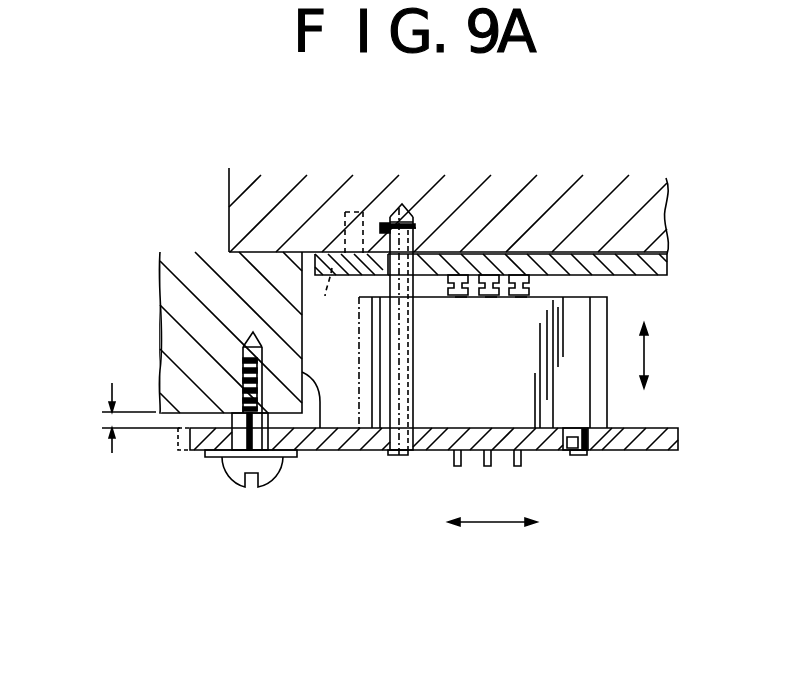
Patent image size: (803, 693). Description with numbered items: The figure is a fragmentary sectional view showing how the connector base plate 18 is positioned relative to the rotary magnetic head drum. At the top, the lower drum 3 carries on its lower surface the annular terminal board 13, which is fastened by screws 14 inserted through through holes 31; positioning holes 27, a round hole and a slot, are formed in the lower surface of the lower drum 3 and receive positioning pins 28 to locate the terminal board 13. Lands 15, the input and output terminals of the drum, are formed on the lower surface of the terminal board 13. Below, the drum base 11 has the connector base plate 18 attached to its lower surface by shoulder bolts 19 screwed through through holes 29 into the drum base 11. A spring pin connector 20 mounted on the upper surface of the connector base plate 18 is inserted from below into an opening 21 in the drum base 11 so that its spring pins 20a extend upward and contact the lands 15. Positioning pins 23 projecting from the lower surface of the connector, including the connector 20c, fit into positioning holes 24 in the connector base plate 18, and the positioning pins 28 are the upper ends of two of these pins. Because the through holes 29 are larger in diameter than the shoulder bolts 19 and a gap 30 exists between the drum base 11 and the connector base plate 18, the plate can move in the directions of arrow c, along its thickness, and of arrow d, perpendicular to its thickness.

The lower drum 3 is at (268, 205).
The drum base 11 is at (162, 270).
The terminal board 13 is at (634, 253).
The screws 14 is at (342, 227).
The lands 15 is at (519, 274).
The connector base plate 18 is at (297, 448).
The shoulder bolts 19 is at (245, 470).
The spring pin connector 20 is at (608, 400).
The spring pins 20a is at (520, 298).
The spring pin connector 20c is at (457, 468).
The openings 21 is at (309, 432).
The positioning pins 23 is at (405, 456).
The positioning holes 24 is at (390, 454).
The positioning holes 27 is at (400, 204).
The positioning pins 28 is at (415, 226).
The through holes 29 is at (226, 462).
The gap 30 is at (112, 422).
The through holes 31 is at (326, 299).
The arrow c is at (645, 352).
The arrow d is at (478, 524).